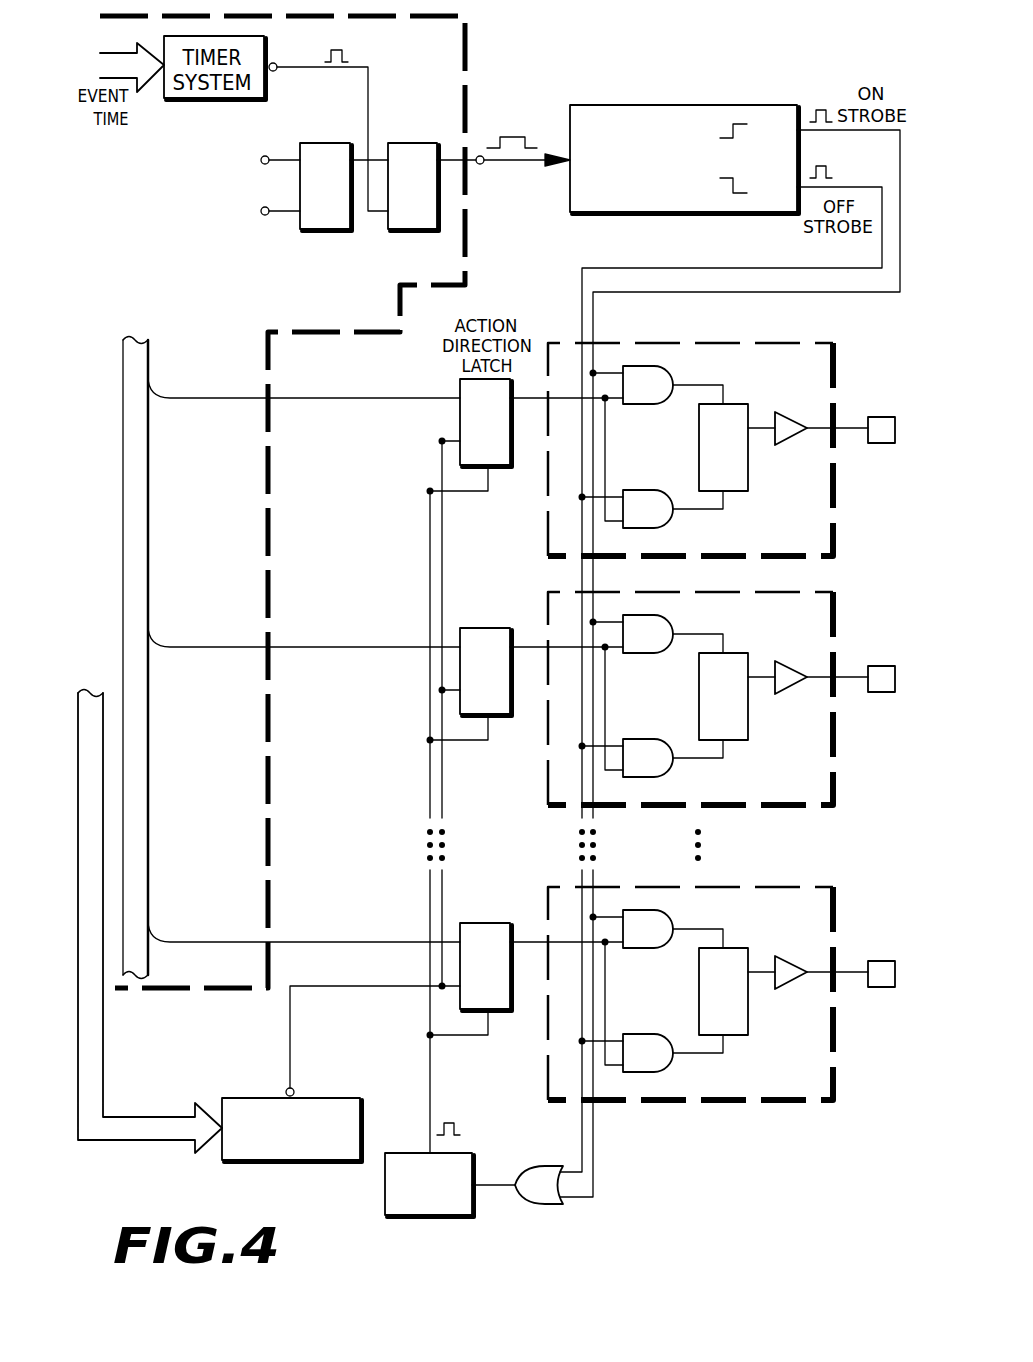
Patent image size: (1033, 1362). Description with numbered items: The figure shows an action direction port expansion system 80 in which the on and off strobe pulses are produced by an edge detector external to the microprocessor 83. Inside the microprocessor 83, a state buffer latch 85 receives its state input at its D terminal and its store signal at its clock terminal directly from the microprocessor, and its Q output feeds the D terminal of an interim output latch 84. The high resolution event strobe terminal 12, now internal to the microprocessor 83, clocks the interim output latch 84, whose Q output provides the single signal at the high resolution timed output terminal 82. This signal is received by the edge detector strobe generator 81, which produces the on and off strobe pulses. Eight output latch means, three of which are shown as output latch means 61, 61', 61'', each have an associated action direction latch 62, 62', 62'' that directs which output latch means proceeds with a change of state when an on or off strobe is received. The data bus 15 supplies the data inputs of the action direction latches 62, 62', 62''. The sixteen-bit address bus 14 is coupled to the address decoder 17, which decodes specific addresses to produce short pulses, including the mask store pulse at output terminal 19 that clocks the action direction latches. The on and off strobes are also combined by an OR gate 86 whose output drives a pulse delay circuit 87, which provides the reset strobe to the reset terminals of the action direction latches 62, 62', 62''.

The high resolution event strobe terminal 12 is at (276, 64).
The address bus 14 is at (103, 1062).
The data bus 15 is at (148, 770).
The address decoder 17 is at (290, 1162).
The output terminal 19 is at (287, 1089).
The output latch means 61 is at (702, 429).
The output latch means 61' is at (702, 722).
The output latch means 61'' is at (702, 1017).
The action direction latch 62 is at (491, 437).
The action direction latch 62' is at (470, 665).
The action direction latch 62'' is at (470, 960).
The action direction port expansion system 80 is at (172, 1211).
The edge detector strobe generator 81 is at (697, 105).
The high resolution timed output terminal 82 is at (483, 163).
The microprocessor 83 is at (268, 503).
The interim output latch 84 is at (413, 231).
The state buffer latch 85 is at (300, 183).
The OR gate 86 is at (545, 1205).
The pulse delay circuit 87 is at (428, 1217).